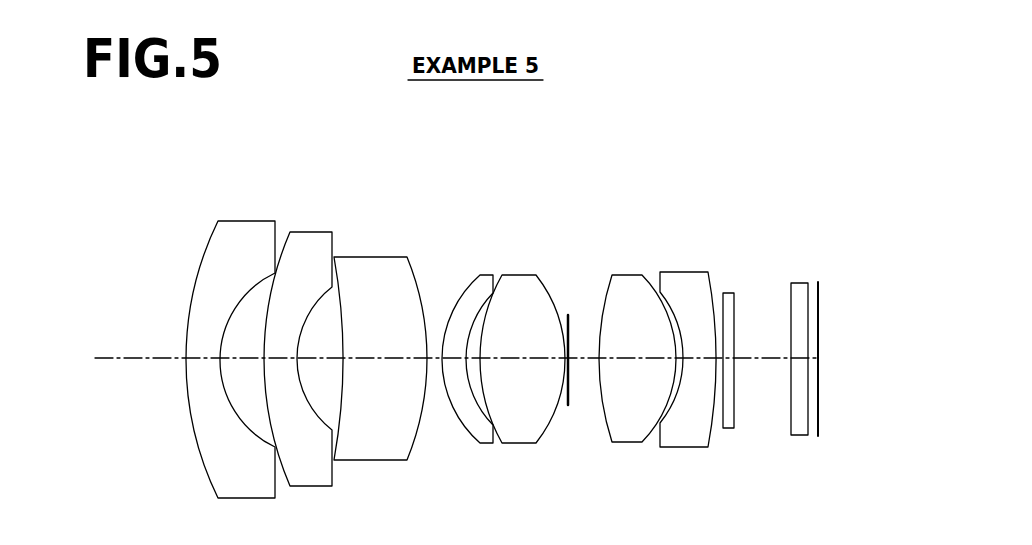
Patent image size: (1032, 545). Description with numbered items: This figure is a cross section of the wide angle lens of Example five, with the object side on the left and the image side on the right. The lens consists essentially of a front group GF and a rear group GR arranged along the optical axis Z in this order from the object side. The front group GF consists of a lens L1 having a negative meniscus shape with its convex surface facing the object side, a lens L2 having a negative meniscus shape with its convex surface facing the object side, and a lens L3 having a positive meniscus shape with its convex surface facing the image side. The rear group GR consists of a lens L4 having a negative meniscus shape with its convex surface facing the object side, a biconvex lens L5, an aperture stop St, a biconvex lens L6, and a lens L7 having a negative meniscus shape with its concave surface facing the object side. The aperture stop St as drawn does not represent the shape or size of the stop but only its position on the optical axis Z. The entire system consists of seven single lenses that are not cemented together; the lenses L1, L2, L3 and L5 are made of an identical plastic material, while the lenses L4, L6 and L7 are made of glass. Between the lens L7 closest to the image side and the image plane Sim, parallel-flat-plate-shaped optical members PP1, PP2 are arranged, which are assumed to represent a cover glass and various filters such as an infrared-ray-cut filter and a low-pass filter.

The optical axis Z is at (113, 355).
The front group GF is at (400, 135).
The rear group GR is at (705, 168).
The lens L1 is at (247, 228).
The lens L2 is at (313, 237).
The lens L3 is at (382, 263).
The lens L4 is at (486, 278).
The lens L5 is at (528, 278).
The lens L6 is at (632, 278).
The lens L7 is at (690, 280).
The aperture stop St is at (570, 316).
The optical member PP1 is at (729, 294).
The optical member PP2 is at (800, 288).
The image plane Sim is at (820, 432).